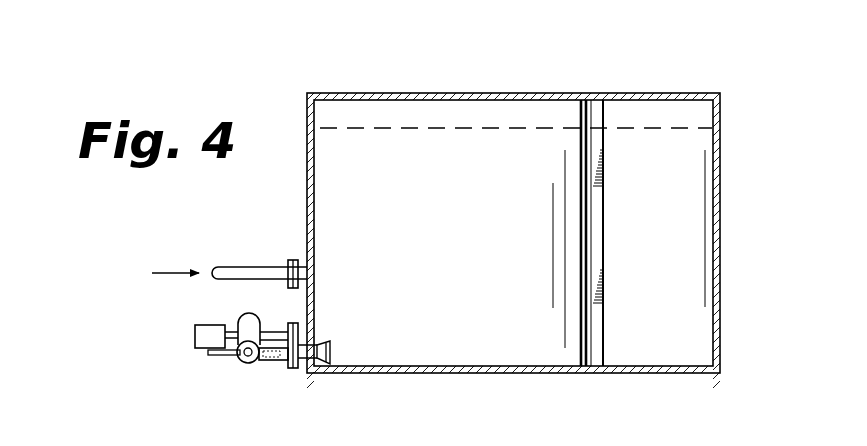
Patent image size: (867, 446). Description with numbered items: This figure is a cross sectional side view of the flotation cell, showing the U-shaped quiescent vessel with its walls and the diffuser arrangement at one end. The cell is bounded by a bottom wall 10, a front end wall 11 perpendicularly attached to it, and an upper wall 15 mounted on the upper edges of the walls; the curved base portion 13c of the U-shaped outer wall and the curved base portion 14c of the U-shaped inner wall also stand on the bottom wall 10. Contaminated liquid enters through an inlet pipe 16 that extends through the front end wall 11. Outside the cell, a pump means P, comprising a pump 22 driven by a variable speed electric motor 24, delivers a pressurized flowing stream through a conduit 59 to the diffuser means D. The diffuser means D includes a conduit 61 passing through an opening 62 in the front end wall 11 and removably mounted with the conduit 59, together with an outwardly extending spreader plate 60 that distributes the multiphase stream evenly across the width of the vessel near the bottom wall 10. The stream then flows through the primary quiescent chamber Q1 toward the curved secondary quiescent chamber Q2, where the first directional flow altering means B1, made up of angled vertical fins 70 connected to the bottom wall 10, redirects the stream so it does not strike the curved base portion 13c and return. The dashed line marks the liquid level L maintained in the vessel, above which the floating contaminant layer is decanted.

The bottom wall 10 is at (418, 373).
The front end wall 11 is at (307, 175).
The curved base portion 13c is at (720, 155).
The curved base portion 14c is at (586, 109).
The upper wall 15 is at (403, 92).
The inlet pipe 16 is at (233, 267).
The pump 22 is at (248, 318).
The variable speed electric motor 24 is at (195, 334).
The conduit 59 is at (273, 362).
The spreader plate 60 is at (327, 335).
The conduit 61 is at (297, 370).
The opening 62 is at (300, 333).
The vertical fins 70 is at (603, 312).
The first directional flow altering means B1 is at (608, 259).
The diffuser means D is at (336, 352).
The liquid level L is at (445, 127).
The manual lever M is at (236, 367).
The pump means P is at (237, 310).
The primary quiescent chamber Q1 is at (462, 207).
The curved secondary quiescent chamber Q2 is at (672, 204).